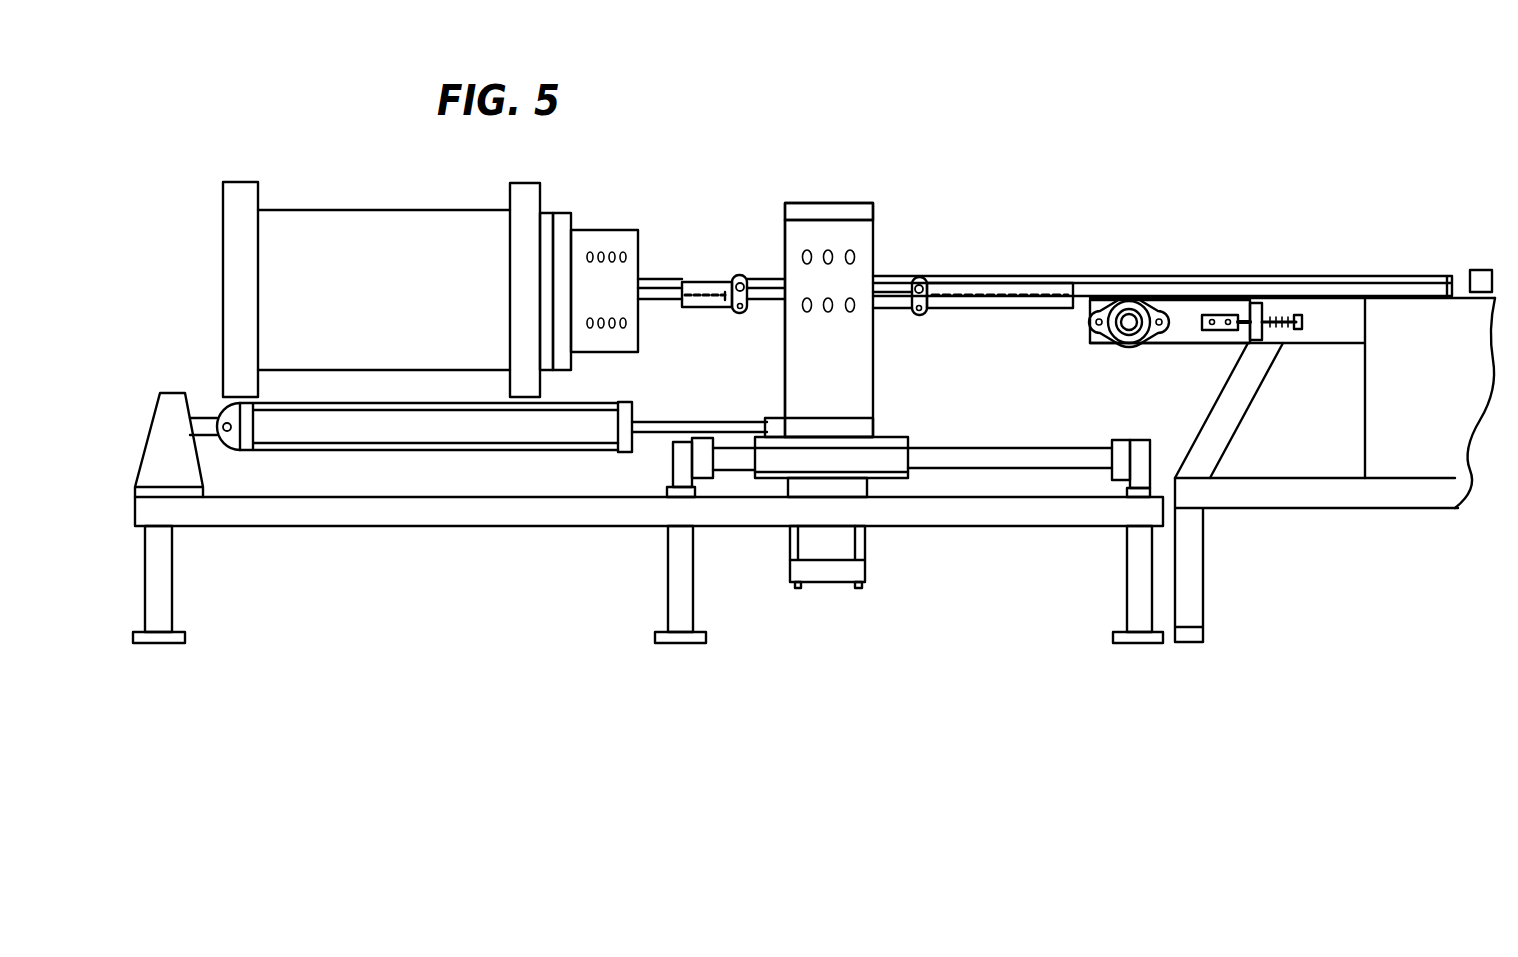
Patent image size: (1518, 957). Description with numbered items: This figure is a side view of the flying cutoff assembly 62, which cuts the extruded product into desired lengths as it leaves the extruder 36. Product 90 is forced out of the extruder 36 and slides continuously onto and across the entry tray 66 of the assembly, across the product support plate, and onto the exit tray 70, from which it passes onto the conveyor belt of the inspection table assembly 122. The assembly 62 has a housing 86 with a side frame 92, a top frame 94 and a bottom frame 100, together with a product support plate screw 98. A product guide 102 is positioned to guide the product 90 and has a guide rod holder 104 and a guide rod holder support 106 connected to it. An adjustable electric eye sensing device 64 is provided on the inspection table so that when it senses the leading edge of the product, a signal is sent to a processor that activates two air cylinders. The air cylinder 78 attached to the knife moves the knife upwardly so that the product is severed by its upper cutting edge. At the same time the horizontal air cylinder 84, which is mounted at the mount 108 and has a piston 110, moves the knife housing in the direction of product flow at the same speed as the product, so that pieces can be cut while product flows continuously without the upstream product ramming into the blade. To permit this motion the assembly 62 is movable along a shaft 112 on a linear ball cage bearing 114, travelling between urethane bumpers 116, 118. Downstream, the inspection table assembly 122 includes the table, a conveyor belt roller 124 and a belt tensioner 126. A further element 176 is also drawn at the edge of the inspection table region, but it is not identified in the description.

The flying cutoff assembly 62 is at (1040, 132).
The extruder 36 is at (380, 210).
The mount 108 is at (175, 393).
The horizontal air cylinder 84 is at (405, 450).
The piston 110 is at (645, 420).
The bottom frame 100 is at (840, 417).
The housing 86 is at (840, 195).
The top frame 94 is at (798, 204).
The side frame 92 is at (785, 232).
The product support plate screw 98 is at (800, 310).
The product 90 is at (670, 278).
The entry tray 66 is at (708, 305).
The guide rod holder support 106 is at (903, 305).
The product guide 102 is at (1062, 290).
The guide rod holder 104 is at (918, 285).
The exit tray 70 is at (1019, 308).
The conveyor belt roller 124 is at (1133, 305).
The belt tensioner 126 is at (1290, 332).
The electric eye sensing device 64 is at (1480, 270).
The side plate 176 is at (1453, 300).
The inspection table assembly 122 is at (1330, 500).
The urethane bumper 118 is at (700, 438).
The linear ball cage bearing 114 is at (907, 437).
The shaft 112 is at (1008, 452).
The urethane bumper 116 is at (1120, 442).
The air cylinder 78 is at (848, 582).